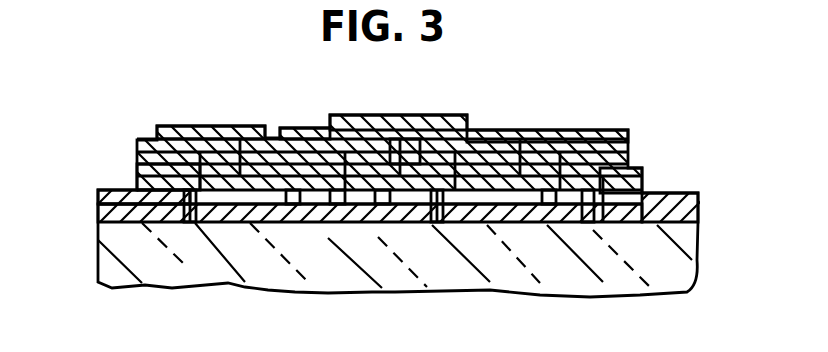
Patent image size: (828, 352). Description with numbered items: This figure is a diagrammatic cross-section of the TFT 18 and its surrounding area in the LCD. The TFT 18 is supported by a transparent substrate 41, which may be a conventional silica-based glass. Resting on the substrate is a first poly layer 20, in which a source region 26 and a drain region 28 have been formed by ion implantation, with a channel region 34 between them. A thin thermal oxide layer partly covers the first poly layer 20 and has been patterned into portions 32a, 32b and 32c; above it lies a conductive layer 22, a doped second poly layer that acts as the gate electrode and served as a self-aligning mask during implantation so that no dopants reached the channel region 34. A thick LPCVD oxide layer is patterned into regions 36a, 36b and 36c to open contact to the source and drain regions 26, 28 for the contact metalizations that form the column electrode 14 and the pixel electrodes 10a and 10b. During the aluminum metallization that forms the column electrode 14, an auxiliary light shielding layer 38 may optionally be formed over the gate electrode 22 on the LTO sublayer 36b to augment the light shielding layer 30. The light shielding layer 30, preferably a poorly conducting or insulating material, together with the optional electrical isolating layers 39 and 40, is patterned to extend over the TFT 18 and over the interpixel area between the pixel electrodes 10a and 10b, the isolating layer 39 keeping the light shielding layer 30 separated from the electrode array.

The TFT 18 is at (492, 92).
The column electrode 14 is at (237, 222).
The pixel electrode 10a is at (97, 191).
The pixel electrode 10b is at (694, 198).
The thick LPCVD oxide layer region 36a is at (98, 214).
The LTO sublayer 36b is at (331, 128).
The thick LPCVD oxide layer region 36c is at (638, 182).
The electrical isolating layer 40 is at (157, 138).
The electrical isolating layer 39 is at (140, 182).
The auxiliary light shielding layer 38 is at (405, 170).
The conductive layer 22 is at (420, 128).
The light shielding layer 30 is at (495, 130).
The thin thermal oxide layer portion 32a is at (192, 222).
The thin thermal oxide layer portion 32b is at (452, 222).
The thin thermal oxide layer portion 32c is at (587, 224).
The source region 26 is at (277, 222).
The first poly layer 20 is at (332, 222).
The channel region 34 is at (381, 210).
The drain region 28 is at (546, 222).
The transparent substrate 41 is at (657, 278).